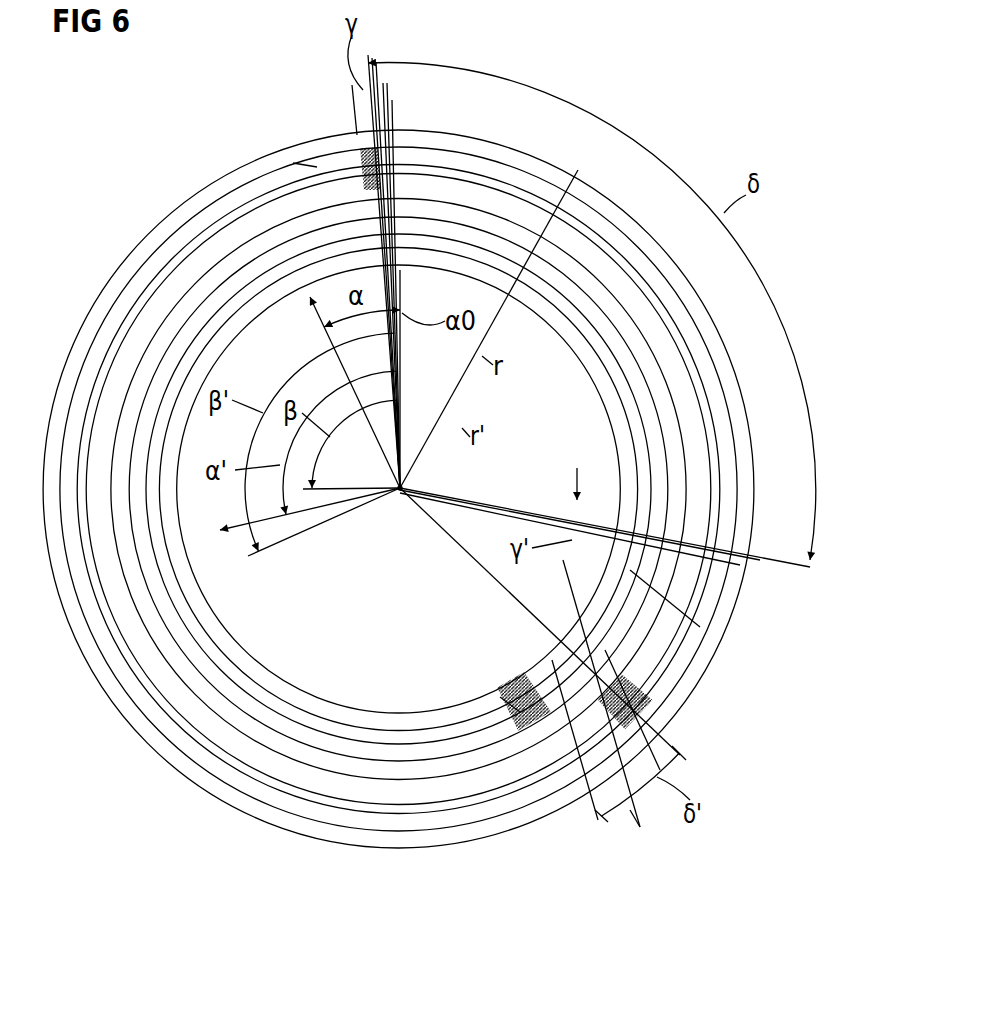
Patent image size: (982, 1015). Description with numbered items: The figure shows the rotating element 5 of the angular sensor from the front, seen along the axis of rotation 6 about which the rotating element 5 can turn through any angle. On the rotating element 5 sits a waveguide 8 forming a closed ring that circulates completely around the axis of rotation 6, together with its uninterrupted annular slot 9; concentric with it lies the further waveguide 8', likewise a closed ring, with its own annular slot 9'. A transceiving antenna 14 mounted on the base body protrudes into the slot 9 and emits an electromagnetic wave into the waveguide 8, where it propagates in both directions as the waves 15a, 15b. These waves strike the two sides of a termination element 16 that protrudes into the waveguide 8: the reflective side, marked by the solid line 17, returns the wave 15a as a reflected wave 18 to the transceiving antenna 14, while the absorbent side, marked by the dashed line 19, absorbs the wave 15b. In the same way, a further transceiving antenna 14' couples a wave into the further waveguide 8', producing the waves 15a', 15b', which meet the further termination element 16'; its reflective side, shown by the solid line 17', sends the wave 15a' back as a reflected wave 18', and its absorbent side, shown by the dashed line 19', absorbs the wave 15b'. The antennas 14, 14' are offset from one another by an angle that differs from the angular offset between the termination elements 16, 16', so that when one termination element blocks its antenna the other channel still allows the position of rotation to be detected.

The rotating element 5 is at (612, 197).
The axis of rotation 6 is at (397, 492).
The waveguide 8 is at (398, 476).
The further waveguide 8' is at (398, 489).
The slot 9 is at (398, 458).
The slot of the further waveguide 9' is at (401, 489).
The transceiving antenna 14 is at (335, 271).
The further transceiving antenna 14' is at (457, 489).
The propagating wave 15a is at (431, 284).
The further propagating wave 15a' is at (704, 622).
The propagating wave 15b is at (260, 151).
The further propagating wave 15b' is at (491, 489).
The termination element 16 is at (657, 710).
The further termination element 16' is at (495, 671).
The solid line 17 is at (573, 621).
The solid line 17' is at (545, 714).
The reflected wave 18 is at (605, 547).
The reflected wave 18' is at (650, 834).
The dashed line 19 is at (596, 693).
The dashed line 19' is at (477, 687).